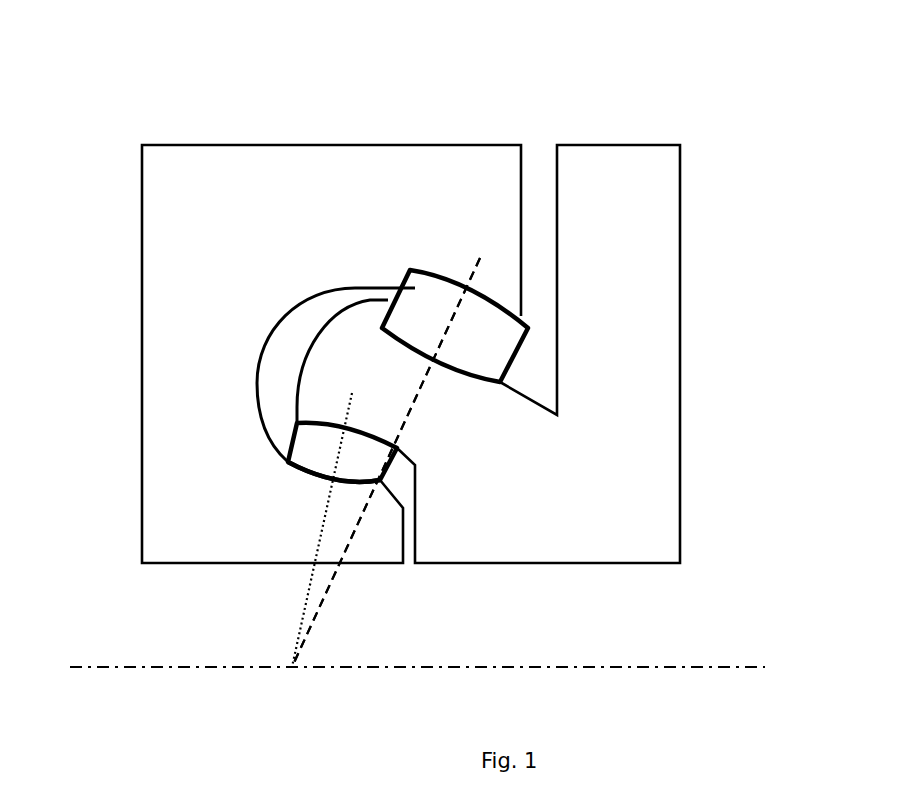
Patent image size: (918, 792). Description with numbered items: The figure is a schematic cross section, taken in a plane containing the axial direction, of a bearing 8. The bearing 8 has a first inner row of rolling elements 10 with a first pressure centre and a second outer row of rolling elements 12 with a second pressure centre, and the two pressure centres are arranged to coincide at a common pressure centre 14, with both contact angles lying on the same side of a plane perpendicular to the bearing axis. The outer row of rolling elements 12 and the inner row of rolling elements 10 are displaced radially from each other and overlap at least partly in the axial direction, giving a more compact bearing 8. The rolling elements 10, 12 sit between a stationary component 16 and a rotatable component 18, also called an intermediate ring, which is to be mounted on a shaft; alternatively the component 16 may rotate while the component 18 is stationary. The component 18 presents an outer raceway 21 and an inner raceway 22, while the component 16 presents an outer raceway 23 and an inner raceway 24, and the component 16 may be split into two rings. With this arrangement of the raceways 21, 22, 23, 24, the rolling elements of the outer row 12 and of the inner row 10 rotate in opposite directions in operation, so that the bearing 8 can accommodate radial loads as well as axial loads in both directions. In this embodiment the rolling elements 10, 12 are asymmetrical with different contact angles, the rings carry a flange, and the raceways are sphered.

The bearing 8 is at (191, 94).
The first inner row of rolling elements 10 is at (313, 443).
The second outer row of rolling elements 12 is at (506, 330).
The common pressure centre 14 is at (263, 648).
The stationary component 16 is at (343, 170).
The rotatable component 18 is at (667, 247).
The outer raceway 21 is at (455, 378).
The inner raceway 22 is at (333, 430).
The outer raceway 23 is at (480, 312).
The inner raceway 24 is at (310, 477).